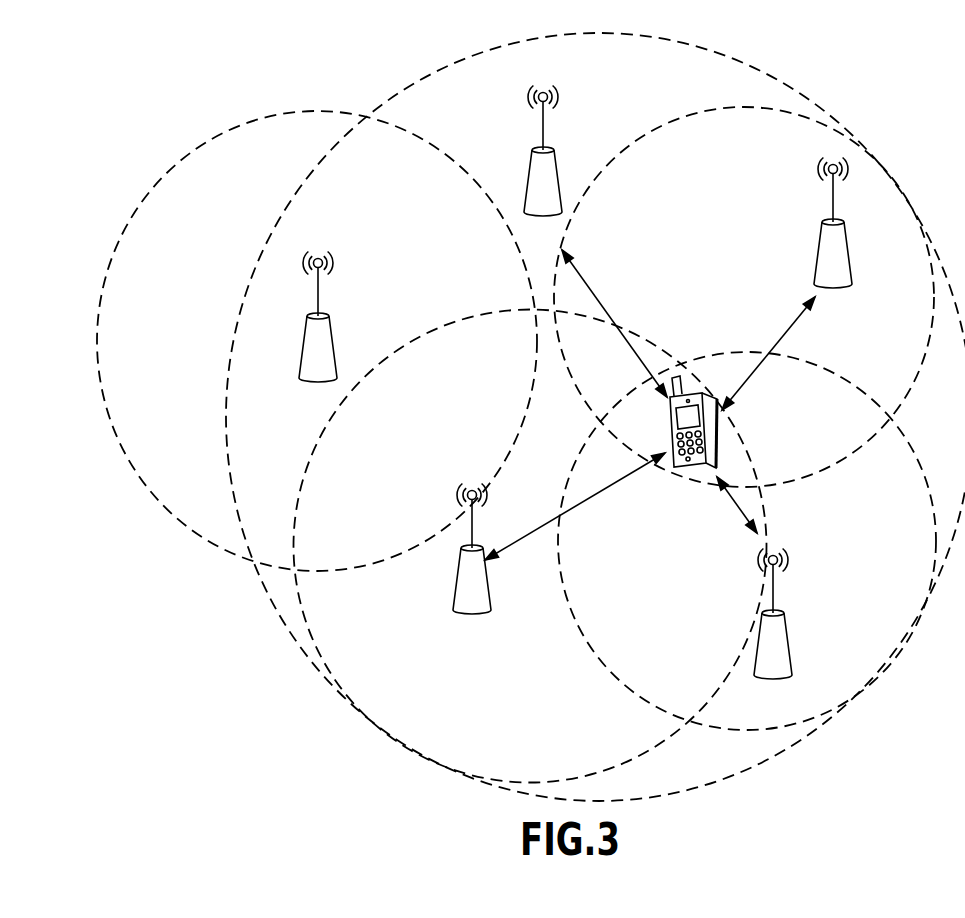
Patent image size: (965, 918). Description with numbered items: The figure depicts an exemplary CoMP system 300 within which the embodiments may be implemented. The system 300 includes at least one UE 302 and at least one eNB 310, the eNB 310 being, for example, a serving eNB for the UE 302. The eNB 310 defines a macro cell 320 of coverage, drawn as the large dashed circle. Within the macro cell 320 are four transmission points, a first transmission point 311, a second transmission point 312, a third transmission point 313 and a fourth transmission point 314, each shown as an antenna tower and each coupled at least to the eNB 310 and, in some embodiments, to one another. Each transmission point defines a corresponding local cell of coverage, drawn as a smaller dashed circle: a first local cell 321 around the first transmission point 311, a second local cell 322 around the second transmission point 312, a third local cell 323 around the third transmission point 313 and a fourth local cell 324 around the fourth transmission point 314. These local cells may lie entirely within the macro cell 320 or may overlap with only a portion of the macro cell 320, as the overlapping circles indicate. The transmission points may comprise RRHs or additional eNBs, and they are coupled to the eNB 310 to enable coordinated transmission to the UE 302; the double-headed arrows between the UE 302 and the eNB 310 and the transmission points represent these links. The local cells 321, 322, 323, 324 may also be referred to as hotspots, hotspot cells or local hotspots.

The CoMP system 300 is at (190, 701).
The UE 302 is at (668, 427).
The eNB 310 is at (530, 180).
The transmission point TP1 311 is at (819, 252).
The transmission point TP2 312 is at (789, 644).
The transmission point TP3 313 is at (459, 577).
The transmission point TP4 314 is at (304, 347).
The macro cell (cell-m) 320 is at (778, 80).
The cell-1 321 is at (596, 178).
The cell-2 322 is at (559, 558).
The cell-3 323 is at (450, 772).
The cell-4 324 is at (328, 110).